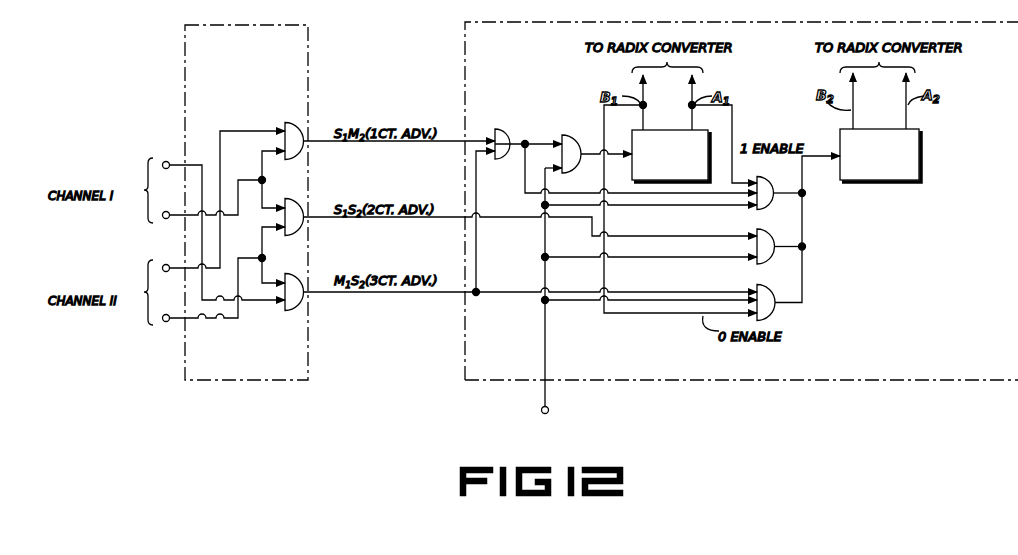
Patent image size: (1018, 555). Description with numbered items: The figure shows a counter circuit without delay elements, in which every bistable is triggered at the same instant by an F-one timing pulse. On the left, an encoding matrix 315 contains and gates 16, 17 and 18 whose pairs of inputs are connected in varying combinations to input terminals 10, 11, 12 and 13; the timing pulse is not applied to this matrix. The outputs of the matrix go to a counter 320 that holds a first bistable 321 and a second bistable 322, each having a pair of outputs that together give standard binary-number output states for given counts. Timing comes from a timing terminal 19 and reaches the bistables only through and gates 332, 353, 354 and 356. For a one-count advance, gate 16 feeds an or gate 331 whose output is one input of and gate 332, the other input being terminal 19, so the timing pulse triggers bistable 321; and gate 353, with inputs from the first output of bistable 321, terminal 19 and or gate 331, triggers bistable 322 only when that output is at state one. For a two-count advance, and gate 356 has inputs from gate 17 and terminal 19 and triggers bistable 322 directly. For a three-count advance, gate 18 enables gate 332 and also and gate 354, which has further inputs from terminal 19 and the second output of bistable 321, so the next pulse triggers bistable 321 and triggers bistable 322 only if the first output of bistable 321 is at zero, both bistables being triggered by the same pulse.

The input terminal 10 is at (170, 158).
The input terminal 11 is at (170, 208).
The input terminal 12 is at (170, 260).
The input terminal 13 is at (168, 315).
The and gate 16 is at (296, 161).
The and gate 17 is at (296, 237).
The and gate 18 is at (296, 312).
The timing terminal 19 is at (549, 407).
The encoding matrix 315 is at (302, 80).
The counter 320 is at (898, 362).
The bistable 321 is at (690, 129).
The bistable 322 is at (862, 181).
The or gate 331 is at (500, 128).
The and gate 332 is at (566, 134).
The and gate 353 is at (784, 178).
The and gate 354 is at (776, 288).
The and gate 356 is at (772, 231).